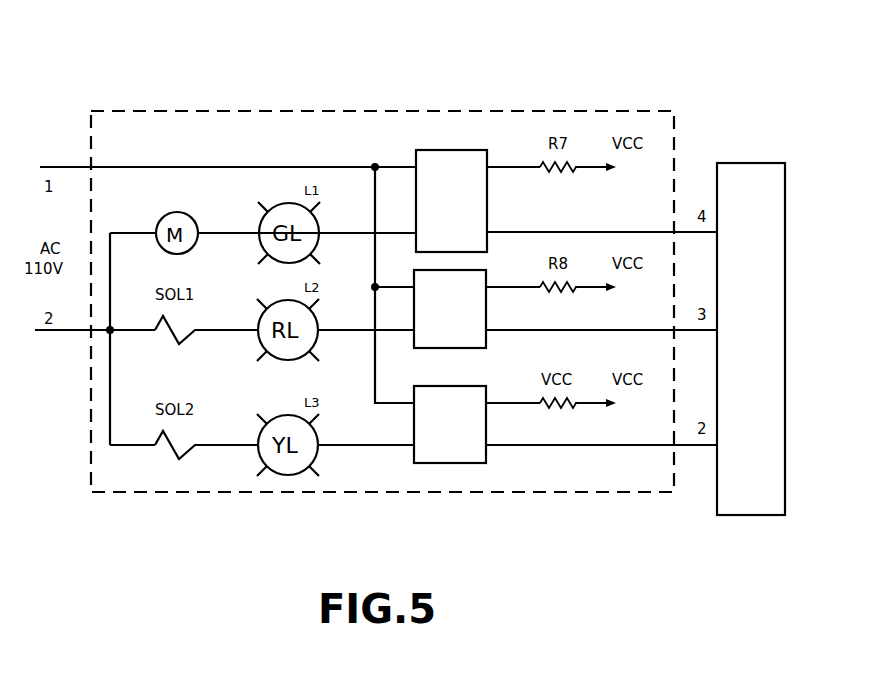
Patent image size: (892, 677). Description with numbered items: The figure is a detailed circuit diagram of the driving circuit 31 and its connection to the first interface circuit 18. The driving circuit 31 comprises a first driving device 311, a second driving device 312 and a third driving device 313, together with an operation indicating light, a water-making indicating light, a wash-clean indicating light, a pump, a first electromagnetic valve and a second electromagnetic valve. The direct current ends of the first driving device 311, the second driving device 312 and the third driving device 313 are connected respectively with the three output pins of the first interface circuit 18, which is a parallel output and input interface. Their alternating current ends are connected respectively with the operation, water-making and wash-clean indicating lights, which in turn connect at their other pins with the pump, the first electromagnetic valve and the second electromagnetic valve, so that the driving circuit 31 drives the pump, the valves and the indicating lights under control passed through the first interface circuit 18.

The first interface circuit 18 is at (783, 245).
The driving circuit 31 is at (583, 110).
The first driving device 311 is at (447, 150).
The second driving device 312 is at (479, 302).
The third driving device 313 is at (410, 425).